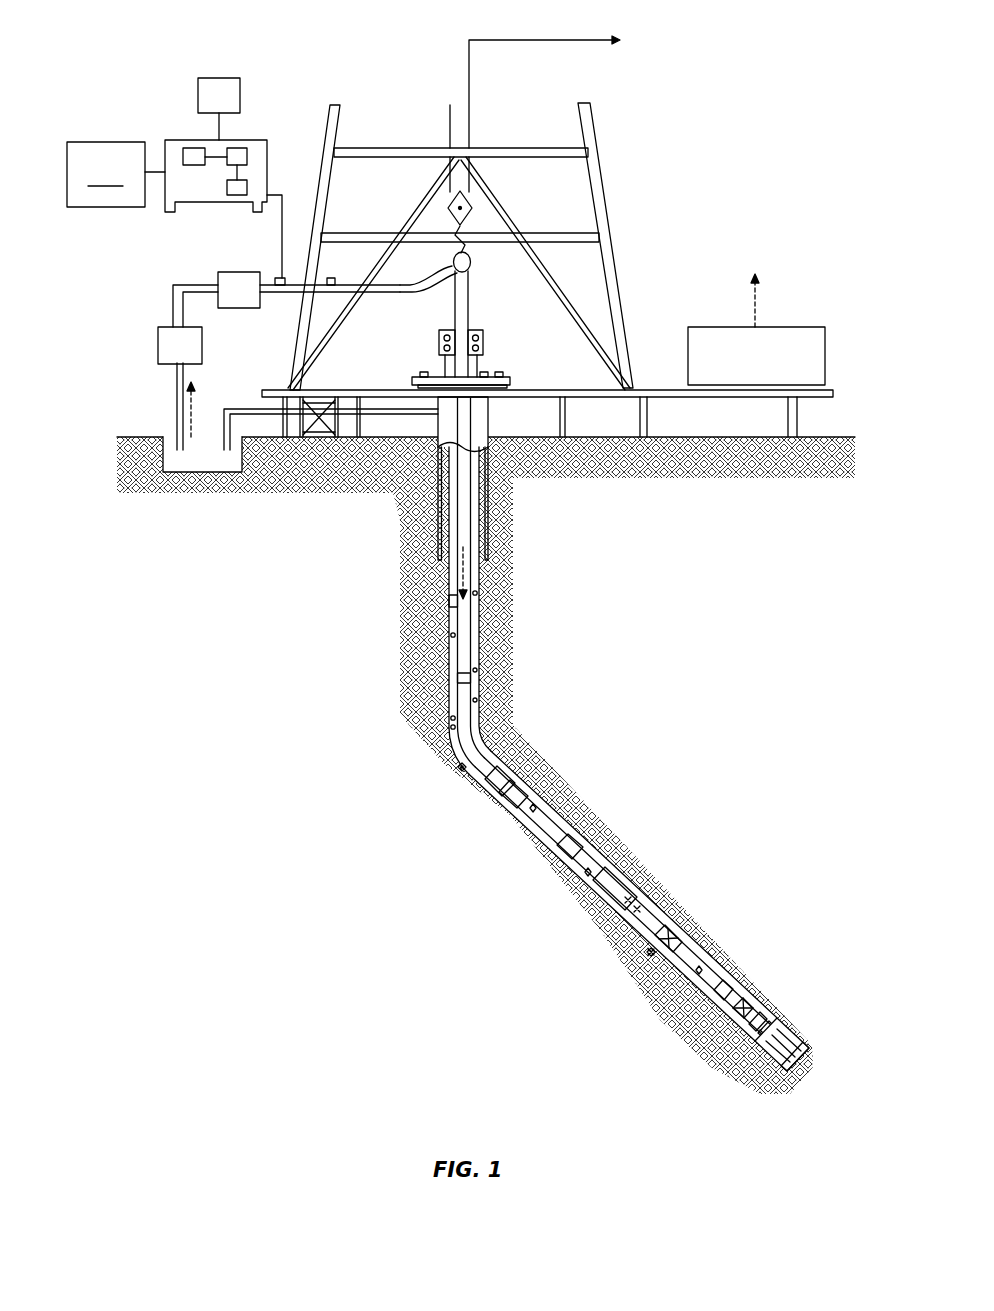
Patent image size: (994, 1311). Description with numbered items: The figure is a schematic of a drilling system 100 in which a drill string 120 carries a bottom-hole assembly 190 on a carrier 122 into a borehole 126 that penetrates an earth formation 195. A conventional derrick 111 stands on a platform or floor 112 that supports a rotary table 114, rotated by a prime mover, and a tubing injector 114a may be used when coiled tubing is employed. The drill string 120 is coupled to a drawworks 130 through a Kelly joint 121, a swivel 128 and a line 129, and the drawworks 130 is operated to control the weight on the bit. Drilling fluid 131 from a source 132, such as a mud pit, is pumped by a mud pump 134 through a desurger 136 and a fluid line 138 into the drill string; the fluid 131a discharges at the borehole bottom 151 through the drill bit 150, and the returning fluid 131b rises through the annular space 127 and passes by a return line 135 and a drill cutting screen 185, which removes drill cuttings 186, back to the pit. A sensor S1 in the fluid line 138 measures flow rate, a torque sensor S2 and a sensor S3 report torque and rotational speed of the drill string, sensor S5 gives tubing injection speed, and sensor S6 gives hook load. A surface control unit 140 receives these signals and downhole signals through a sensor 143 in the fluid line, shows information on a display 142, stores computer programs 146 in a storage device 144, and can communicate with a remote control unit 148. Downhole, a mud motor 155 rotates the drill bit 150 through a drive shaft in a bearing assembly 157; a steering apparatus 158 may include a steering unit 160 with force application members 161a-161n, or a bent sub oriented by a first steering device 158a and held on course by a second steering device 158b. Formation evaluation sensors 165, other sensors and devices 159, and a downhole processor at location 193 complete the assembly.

The drilling system 100 is at (389, 46).
The derrick 111 is at (612, 248).
The platform or floor 112 is at (632, 388).
The rotary table 114 is at (488, 398).
The tubing injector 114a is at (483, 342).
The drill string 120 is at (478, 650).
The Kelly joint 121 is at (468, 317).
The carrier 122 is at (452, 634).
The borehole 126 is at (482, 728).
The annular space 127 is at (503, 763).
The swivel 128 is at (447, 270).
The line 129 is at (470, 122).
The drawworks 130 is at (795, 327).
The drilling fluid 131 is at (172, 442).
The drilling fluid from the drilling tubular 131a is at (460, 574).
The returning drilling fluid 131b is at (452, 733).
The source 132 is at (195, 470).
The mud pump 134 is at (157, 340).
The return line 135 is at (405, 414).
The desurger 136 is at (217, 275).
The fluid line 138 is at (293, 293).
The surface control unit 140 is at (198, 140).
The display/monitor 142 is at (220, 78).
The sensor 143 is at (278, 278).
The storage device 144 is at (240, 140).
The computer programs 146 is at (233, 196).
The remote control unit 148 is at (106, 174).
The drill bit 150 is at (799, 1035).
The bottom of the borehole 151 is at (773, 1093).
The downhole motor 155 is at (557, 830).
The bearing assembly 157 is at (757, 1007).
The steering apparatus 158 is at (765, 1020).
The first steering device 158a is at (763, 1040).
The second steering device 158b is at (757, 1033).
The sensors and devices 159 is at (768, 1045).
The steering unit 160 is at (750, 1023).
The force application members 161a-161n is at (770, 998).
The formation evaluation sensors 165 is at (651, 953).
The drill cutting screen 185 is at (300, 373).
The drill cuttings 186 is at (477, 595).
The bottom-hole assembly 190 is at (684, 806).
The downhole processor location 193 is at (462, 768).
The earth formation 195 is at (823, 886).
The sensor S1 is at (331, 278).
The surface torque sensor S2 is at (502, 372).
The sensor S3 is at (425, 372).
The sensor S5 is at (468, 283).
The sensor S6 is at (453, 246).